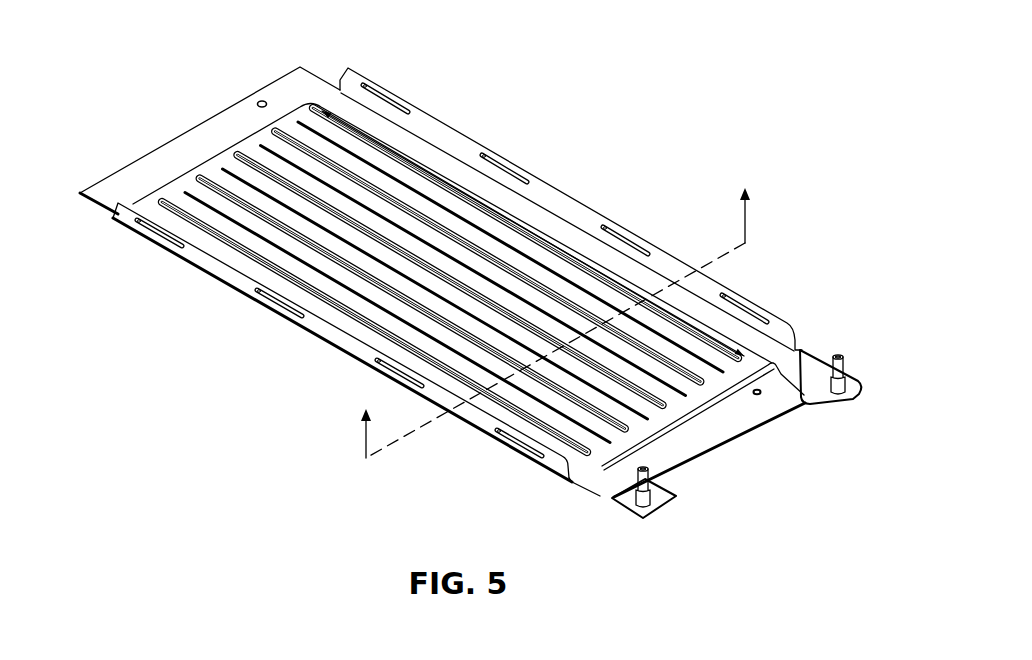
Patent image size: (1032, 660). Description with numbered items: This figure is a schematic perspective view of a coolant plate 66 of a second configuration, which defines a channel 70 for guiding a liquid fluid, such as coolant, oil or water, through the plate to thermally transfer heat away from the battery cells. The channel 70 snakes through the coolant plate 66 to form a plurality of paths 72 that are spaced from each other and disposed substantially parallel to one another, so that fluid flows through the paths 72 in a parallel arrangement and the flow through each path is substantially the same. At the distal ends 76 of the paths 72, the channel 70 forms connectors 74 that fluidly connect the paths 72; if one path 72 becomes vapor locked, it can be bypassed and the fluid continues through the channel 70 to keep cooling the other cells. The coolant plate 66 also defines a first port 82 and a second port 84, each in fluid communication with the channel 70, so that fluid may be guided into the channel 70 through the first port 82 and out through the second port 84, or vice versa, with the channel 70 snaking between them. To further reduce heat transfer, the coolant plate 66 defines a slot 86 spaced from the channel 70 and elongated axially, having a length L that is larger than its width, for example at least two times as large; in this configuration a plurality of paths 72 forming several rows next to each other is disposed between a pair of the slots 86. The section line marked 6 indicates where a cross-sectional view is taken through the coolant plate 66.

The coolant plate 66 is at (728, 53).
The connectors 74 is at (277, 138).
The slot 86 is at (168, 202).
The distal ends 76 is at (98, 225).
The length L is at (486, 196).
The channel 70 is at (683, 463).
The paths 72 is at (574, 479).
The first port 82 is at (618, 500).
The second port 84 is at (850, 378).
The section line 6- 6 is at (557, 311).